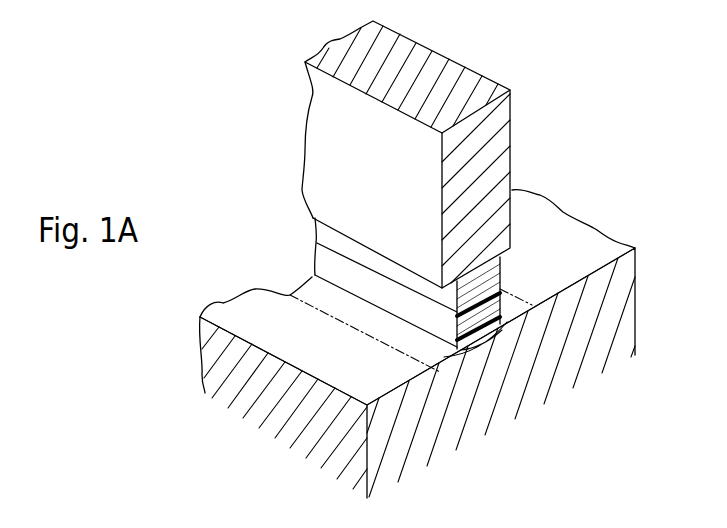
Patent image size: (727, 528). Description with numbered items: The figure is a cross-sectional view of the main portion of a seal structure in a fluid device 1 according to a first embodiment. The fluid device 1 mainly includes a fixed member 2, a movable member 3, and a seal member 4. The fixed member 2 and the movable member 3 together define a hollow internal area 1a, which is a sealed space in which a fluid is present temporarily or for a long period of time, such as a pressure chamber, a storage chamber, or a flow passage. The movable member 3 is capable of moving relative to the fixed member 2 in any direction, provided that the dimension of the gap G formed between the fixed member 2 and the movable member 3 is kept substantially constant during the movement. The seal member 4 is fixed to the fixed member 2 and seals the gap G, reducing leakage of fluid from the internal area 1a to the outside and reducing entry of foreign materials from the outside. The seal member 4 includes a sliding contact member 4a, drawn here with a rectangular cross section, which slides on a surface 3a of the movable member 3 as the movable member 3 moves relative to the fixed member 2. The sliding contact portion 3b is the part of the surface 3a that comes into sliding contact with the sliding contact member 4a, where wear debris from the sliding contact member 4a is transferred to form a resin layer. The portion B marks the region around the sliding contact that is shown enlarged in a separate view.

The fluid device 1 is at (287, 97).
The hollow internal area 1a is at (598, 156).
The fixed member 2 is at (315, 167).
The movable member 3 is at (222, 377).
The surface 3a is at (343, 377).
The sliding contact portion 3b is at (417, 360).
The seal member 4 is at (322, 230).
The sliding contact member 4a is at (330, 272).
The portion B is at (496, 340).
The gap G is at (355, 314).